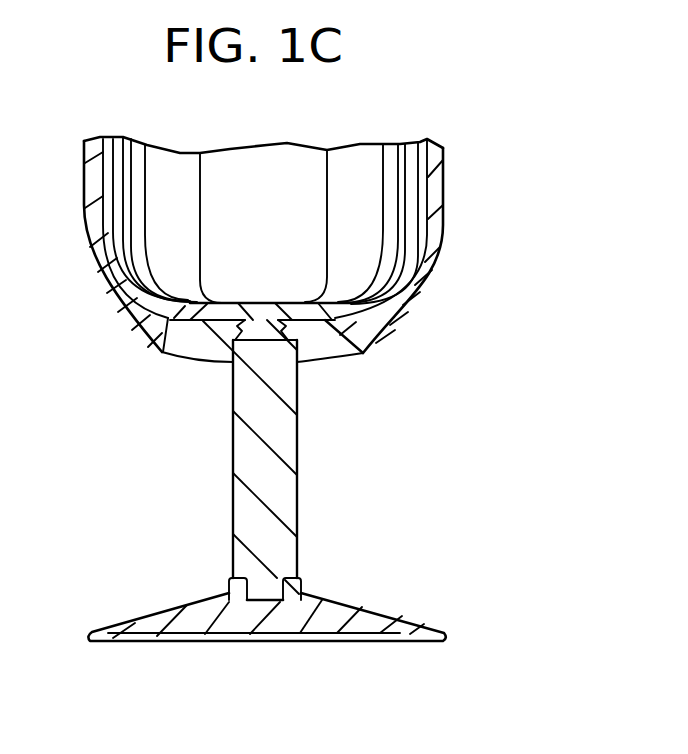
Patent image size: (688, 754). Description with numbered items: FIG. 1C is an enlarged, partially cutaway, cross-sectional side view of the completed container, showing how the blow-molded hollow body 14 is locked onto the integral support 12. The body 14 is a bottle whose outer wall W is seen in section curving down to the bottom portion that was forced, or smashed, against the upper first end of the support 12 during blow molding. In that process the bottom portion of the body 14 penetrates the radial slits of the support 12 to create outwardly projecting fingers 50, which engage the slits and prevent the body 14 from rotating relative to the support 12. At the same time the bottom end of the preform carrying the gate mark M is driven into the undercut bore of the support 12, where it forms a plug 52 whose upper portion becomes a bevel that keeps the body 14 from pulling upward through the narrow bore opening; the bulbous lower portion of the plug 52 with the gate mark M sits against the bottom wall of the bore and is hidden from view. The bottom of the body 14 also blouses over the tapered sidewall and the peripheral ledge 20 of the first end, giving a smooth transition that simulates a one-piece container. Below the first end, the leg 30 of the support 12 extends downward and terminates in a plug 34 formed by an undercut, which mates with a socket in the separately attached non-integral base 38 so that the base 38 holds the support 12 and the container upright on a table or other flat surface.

The hollow body 14 is at (389, 117).
The outer wall W is at (445, 218).
The fingers 50 is at (142, 330).
The peripheral ledge 20 is at (168, 352).
The gate mark M is at (300, 348).
The plug 52 is at (228, 358).
The support 12 is at (312, 490).
The leg 30 is at (258, 532).
The plug 34 is at (268, 592).
The non-integral base 38 is at (414, 628).